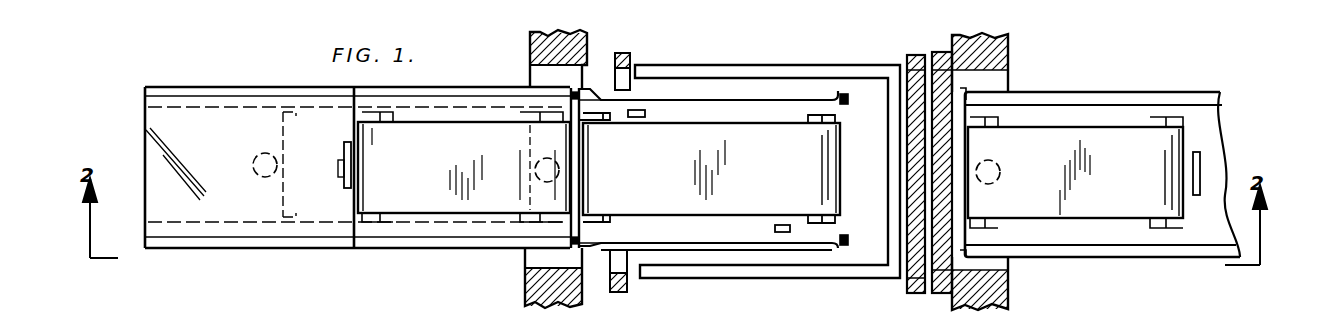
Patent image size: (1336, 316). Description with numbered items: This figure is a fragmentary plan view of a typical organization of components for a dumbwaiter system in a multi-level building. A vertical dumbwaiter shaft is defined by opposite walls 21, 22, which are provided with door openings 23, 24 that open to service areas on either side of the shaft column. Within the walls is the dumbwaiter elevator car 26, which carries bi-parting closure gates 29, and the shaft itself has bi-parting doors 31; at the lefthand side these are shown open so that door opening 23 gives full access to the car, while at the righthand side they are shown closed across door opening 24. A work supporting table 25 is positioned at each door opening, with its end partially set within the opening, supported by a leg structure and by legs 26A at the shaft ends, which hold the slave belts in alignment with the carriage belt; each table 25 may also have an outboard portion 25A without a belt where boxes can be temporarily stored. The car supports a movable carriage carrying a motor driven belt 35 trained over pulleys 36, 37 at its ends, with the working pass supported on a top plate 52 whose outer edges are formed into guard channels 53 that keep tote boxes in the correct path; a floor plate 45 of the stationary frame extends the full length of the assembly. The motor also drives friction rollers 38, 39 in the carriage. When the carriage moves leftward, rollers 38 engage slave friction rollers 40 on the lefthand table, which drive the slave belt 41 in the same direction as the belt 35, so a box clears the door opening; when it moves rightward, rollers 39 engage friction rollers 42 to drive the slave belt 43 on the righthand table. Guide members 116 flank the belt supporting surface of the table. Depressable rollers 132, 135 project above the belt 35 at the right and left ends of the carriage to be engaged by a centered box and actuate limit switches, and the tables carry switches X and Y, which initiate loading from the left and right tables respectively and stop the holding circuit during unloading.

The shaft wall 21 is at (536, 42).
The shaft wall 22 is at (1005, 47).
The door opening 23 is at (530, 262).
The door opening 24 is at (1000, 268).
The work supporting table 25 is at (1152, 258).
The outboard portion 25A is at (185, 250).
The dumbwaiter elevator car 26 is at (254, 158).
The leg 26A is at (562, 172).
The bi-parting closure gate 29 is at (912, 165).
The bi-parting shaft door 31 is at (943, 195).
The motor driven belt 35 is at (711, 169).
The pulley 36 is at (600, 125).
The pulley 37 is at (825, 126).
The friction roller 38 is at (604, 89).
The friction roller 39 is at (848, 100).
The slave friction roller 40 is at (585, 245).
The slave belt 41 is at (464, 167).
The friction roller 42 is at (990, 80).
The slave belt 43 is at (1075, 172).
The floor plate 45 is at (878, 246).
The top plate 52 is at (740, 98).
The guard channel 53 is at (805, 97).
The guide member 116 is at (445, 95).
The depressable roller 132 is at (786, 226).
The depressable roller 135 is at (638, 118).
The switch X is at (343, 176).
The switch Y is at (1203, 168).